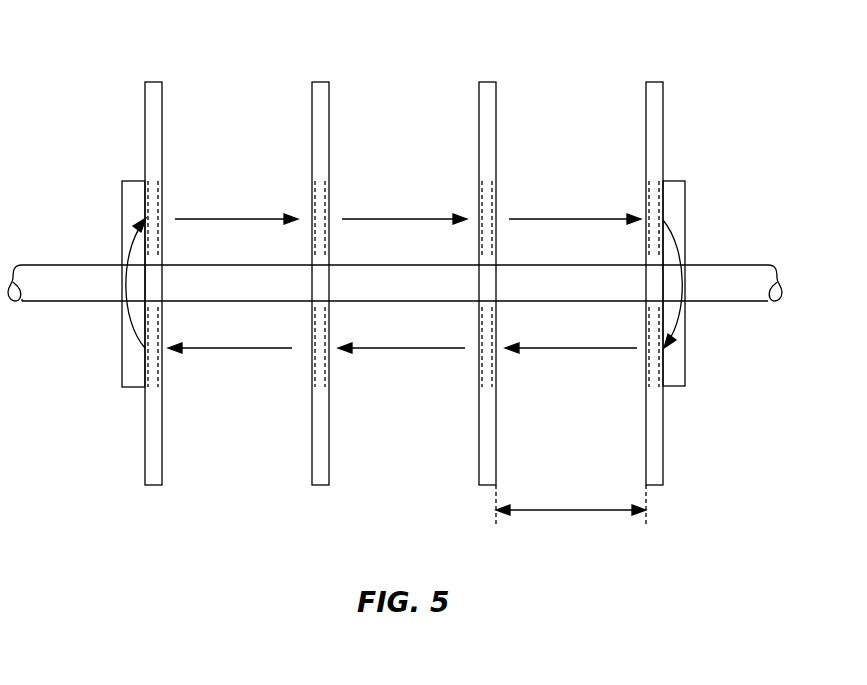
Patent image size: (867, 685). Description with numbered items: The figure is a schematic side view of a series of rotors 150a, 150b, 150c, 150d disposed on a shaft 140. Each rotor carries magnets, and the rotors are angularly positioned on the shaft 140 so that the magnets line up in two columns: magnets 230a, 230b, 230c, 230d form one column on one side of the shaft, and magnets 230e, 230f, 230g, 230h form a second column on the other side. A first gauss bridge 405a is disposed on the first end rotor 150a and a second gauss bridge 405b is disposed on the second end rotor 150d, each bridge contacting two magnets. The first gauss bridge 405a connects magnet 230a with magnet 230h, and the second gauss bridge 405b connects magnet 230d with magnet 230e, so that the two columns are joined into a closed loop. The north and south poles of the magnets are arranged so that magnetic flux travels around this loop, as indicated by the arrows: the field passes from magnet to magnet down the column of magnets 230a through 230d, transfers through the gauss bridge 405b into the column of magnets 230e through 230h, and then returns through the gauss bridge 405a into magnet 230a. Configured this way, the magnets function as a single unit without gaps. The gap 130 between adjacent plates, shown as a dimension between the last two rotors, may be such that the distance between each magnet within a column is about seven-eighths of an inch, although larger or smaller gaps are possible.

The shaft 140 is at (748, 265).
The first end rotor 150a is at (163, 82).
The rotor 150b is at (330, 82).
The rotor 150c is at (497, 82).
The second end rotor 150d is at (664, 82).
The magnet 230a is at (150, 202).
The magnet 230b is at (317, 202).
The magnet 230c is at (484, 202).
The magnet 230d is at (653, 202).
The magnet 230e is at (652, 368).
The magnet 230f is at (485, 368).
The magnet 230g is at (318, 368).
The magnet 230h is at (152, 368).
The first gauss bridge 405a is at (122, 193).
The second gauss bridge 405b is at (687, 370).
The gap 130 is at (604, 513).